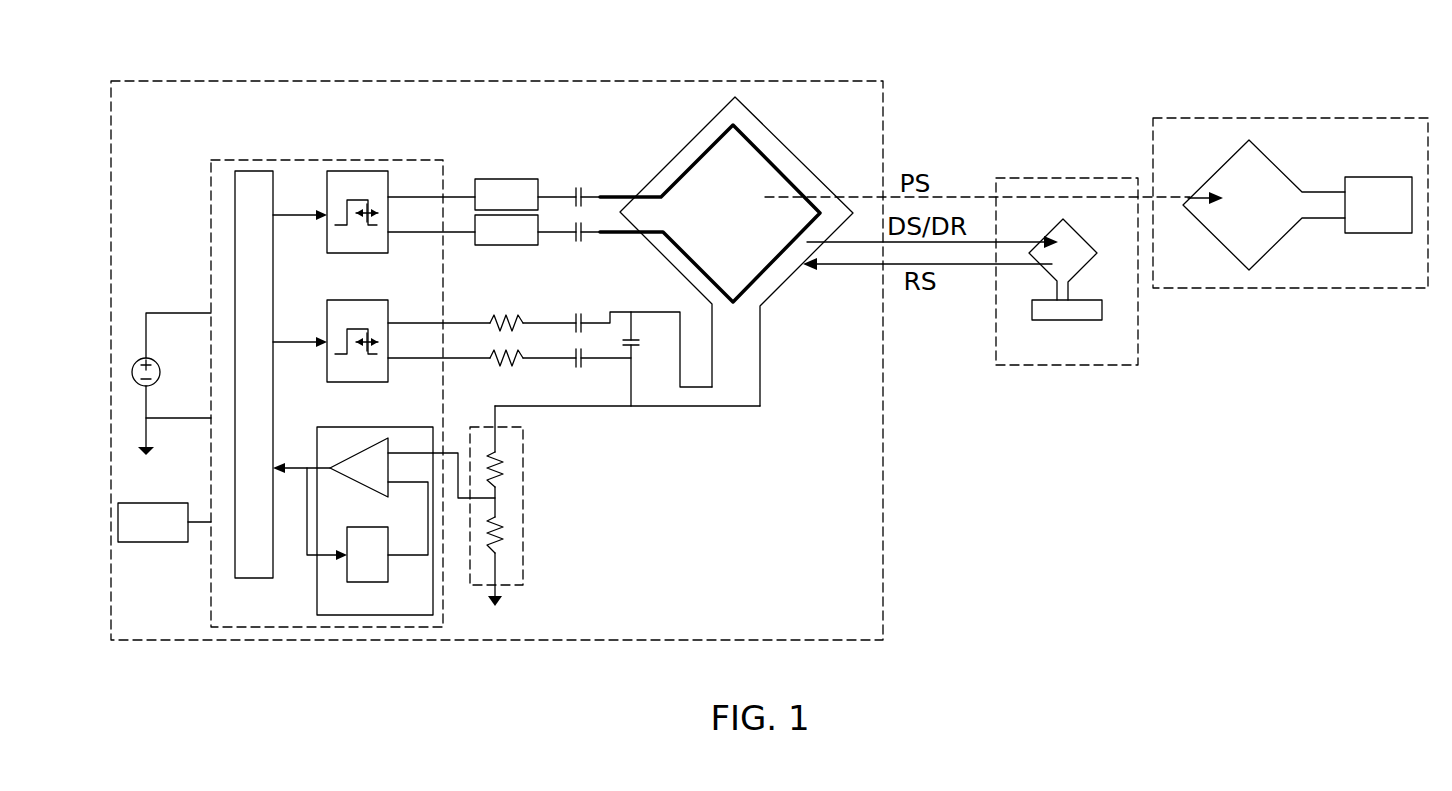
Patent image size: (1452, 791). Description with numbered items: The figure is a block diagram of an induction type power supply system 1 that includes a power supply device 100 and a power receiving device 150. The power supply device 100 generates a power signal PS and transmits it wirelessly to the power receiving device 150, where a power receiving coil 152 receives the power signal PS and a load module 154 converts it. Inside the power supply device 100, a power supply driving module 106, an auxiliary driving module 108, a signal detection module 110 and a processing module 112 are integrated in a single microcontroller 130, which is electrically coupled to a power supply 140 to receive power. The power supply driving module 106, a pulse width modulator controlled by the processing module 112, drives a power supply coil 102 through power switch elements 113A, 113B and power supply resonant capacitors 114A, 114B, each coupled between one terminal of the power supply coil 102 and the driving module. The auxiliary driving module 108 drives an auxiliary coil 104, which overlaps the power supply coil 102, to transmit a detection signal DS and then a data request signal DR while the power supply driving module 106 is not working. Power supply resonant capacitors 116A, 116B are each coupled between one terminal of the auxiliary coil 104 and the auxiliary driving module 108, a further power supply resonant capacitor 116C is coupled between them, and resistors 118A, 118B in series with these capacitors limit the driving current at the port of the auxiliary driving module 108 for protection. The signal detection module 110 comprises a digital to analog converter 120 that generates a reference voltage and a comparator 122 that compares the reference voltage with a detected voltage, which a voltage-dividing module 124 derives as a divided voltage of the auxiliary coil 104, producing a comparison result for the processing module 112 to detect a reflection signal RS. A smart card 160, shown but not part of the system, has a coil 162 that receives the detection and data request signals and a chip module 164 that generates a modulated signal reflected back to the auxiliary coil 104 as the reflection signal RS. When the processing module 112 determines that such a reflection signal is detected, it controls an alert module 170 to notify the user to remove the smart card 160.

The induction type power supply system 1 is at (1096, 54).
The power supply device 100 is at (803, 616).
The power supply coil 102 is at (793, 180).
The auxiliary coil 104 is at (662, 172).
The power supply driving module 106 is at (327, 176).
The auxiliary driving module 108 is at (327, 372).
The signal detection module 110 is at (353, 521).
The processing module 112 is at (235, 212).
The power switch element 113A is at (531, 206).
The power switch element 113B is at (531, 241).
The power supply resonant capacitor 114A is at (577, 187).
The power supply resonant capacitor 114B is at (582, 241).
The power supply resonant capacitor 116A is at (576, 320).
The power supply resonant capacitor 116B is at (578, 363).
The power supply resonant capacitor 116C is at (643, 348).
The resistor 118A is at (494, 320).
The resistor 118B is at (512, 362).
The digital to analog converter 120 is at (388, 563).
The comparator 122 is at (385, 480).
The voltage-dividing module 124 is at (523, 525).
The microcontroller 130 is at (240, 609).
The power supply 140 is at (134, 362).
The power receiving device 150 is at (1355, 276).
The power receiving coil 152 is at (1225, 250).
The load module 154 is at (1358, 218).
The smart card 160 is at (1083, 354).
The coil 162 is at (1043, 268).
The chip module 164 is at (1032, 310).
The alert module 170 is at (133, 535).